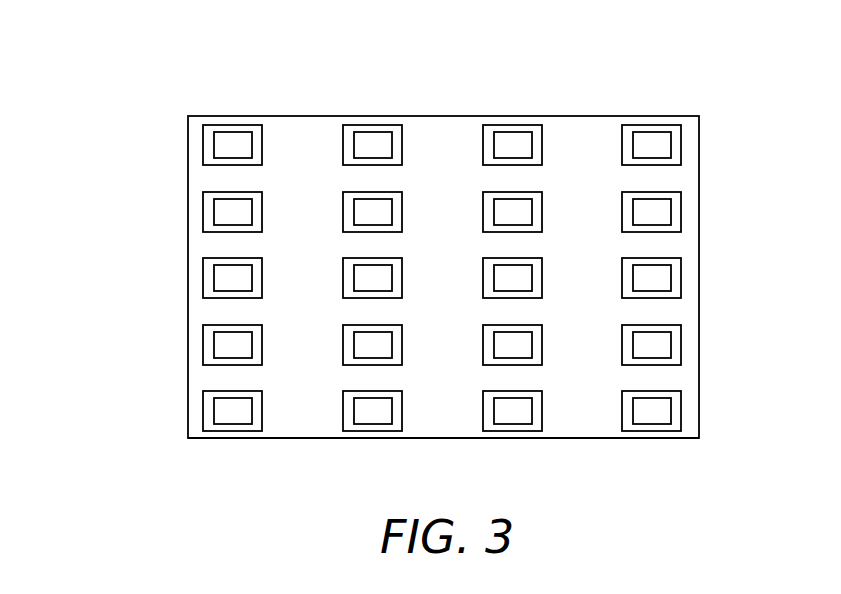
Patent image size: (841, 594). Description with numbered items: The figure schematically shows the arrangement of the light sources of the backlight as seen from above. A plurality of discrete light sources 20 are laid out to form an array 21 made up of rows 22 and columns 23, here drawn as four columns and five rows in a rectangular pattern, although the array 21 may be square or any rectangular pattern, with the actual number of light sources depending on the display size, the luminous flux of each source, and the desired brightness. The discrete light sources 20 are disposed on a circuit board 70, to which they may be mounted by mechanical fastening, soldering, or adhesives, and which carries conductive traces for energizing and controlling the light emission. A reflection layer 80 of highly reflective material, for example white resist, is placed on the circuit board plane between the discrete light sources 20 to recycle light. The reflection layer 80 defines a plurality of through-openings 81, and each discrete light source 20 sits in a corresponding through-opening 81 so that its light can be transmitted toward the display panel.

The array 21 is at (138, 48).
The rows 22 is at (170, 143).
The columns 23 is at (231, 455).
The discrete light source 20 is at (662, 143).
The circuit board 70 is at (350, 104).
The through-opening 81 is at (394, 138).
The reflection layer 80 is at (466, 137).